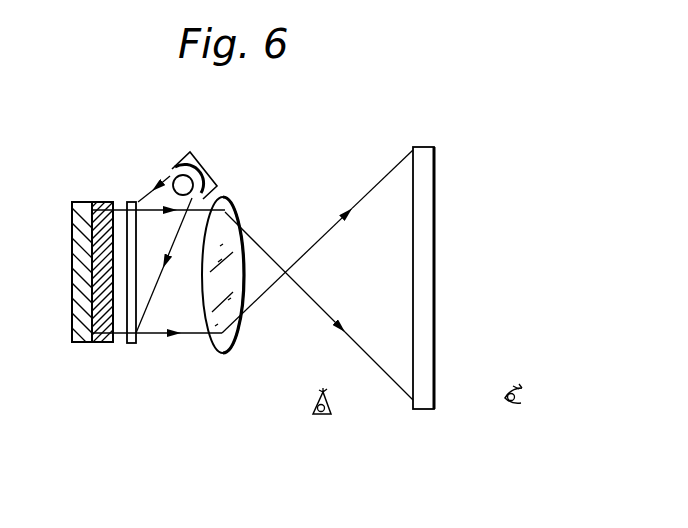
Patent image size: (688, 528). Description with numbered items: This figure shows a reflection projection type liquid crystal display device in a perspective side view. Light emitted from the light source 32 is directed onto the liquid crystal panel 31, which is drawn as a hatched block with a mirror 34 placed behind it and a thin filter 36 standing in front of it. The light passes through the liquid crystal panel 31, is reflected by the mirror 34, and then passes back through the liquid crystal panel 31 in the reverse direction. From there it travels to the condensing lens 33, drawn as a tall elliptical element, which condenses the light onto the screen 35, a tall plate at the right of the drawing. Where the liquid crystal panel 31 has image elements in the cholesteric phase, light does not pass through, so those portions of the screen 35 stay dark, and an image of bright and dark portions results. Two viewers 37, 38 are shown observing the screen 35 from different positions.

The liquid crystal panel 31 is at (103, 343).
The light source 32 is at (203, 160).
The lens 33 is at (231, 201).
The mirror 34 is at (78, 343).
The screen 35 is at (434, 197).
The filter 36 is at (132, 344).
The viewer 37 is at (520, 406).
The viewer 38 is at (322, 419).